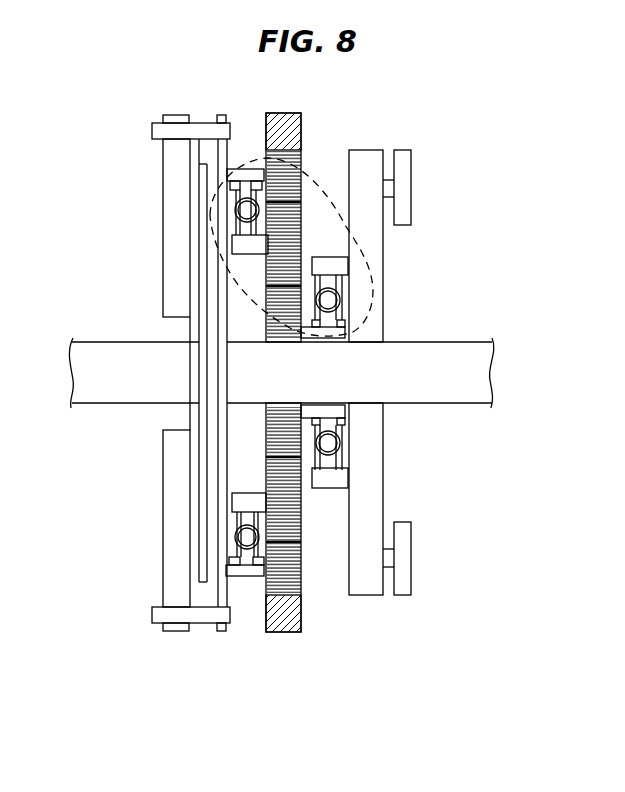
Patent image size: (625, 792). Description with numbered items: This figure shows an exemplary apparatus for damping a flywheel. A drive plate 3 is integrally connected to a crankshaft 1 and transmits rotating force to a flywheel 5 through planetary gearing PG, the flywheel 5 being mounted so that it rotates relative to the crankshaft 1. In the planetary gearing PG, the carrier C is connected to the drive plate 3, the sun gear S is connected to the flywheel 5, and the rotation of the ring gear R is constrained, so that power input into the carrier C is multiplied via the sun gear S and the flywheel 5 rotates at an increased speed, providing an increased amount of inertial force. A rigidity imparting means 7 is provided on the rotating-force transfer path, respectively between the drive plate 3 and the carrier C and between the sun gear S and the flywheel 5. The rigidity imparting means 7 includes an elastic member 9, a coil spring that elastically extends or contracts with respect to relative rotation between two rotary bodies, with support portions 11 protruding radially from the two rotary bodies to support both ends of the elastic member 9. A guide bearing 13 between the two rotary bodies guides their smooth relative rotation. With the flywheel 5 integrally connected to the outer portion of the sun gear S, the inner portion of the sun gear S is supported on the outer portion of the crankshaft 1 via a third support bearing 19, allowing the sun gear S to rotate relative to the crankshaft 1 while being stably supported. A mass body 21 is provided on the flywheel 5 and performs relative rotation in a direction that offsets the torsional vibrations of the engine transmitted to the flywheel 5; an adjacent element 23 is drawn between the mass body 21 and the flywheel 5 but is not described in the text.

The crankshaft 1 is at (460, 375).
The drive plate 3 is at (222, 153).
The flywheel 5 is at (373, 178).
The rigidity imparting means 7 is at (353, 244).
The elastic member 9 is at (235, 537).
The support portion 11 is at (237, 520).
The guide bearing 13 is at (240, 559).
The third support bearing 19 is at (338, 386).
The mass body 21 is at (408, 585).
The connecting member 23 is at (390, 558).
The planetary gearing PG is at (93, 207).
The ring gear R is at (266, 161).
The carrier C is at (238, 243).
The sun gear S is at (266, 305).